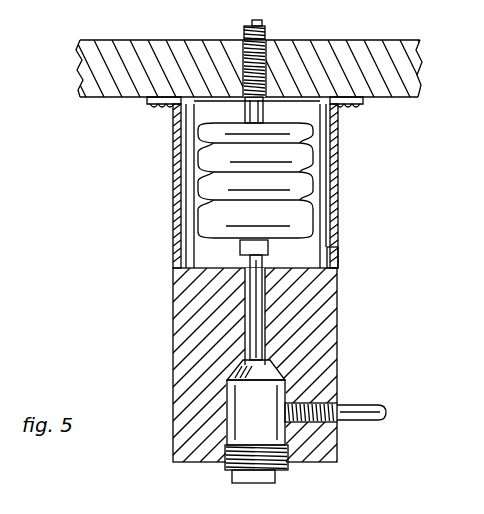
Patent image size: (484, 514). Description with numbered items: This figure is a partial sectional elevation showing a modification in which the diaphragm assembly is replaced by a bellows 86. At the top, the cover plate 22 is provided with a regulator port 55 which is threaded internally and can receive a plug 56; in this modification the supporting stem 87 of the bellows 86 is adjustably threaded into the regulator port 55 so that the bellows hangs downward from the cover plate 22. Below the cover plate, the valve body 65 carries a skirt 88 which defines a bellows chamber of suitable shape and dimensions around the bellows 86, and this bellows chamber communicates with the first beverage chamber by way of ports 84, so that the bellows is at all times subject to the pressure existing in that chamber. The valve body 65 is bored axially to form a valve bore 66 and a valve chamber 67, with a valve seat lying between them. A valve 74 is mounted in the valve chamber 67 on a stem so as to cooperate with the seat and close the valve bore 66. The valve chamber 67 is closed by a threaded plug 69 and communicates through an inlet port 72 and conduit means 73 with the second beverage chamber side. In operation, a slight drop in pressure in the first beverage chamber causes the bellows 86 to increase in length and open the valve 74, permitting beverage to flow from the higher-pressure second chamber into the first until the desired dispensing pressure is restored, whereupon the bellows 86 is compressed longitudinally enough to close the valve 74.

The cover plate 22 is at (358, 52).
The supporting stem 87 is at (212, 52).
The plug 56 is at (263, 23).
The regulator port 55 is at (266, 56).
The skirt 88 is at (173, 165).
The ports 84 is at (338, 257).
The bellows 86 is at (313, 152).
The valve body member 65 is at (305, 298).
The valve bore 66 is at (246, 298).
The valve 74 is at (268, 362).
The valve chamber 67 is at (242, 422).
The threaded plug 69 is at (250, 484).
The inlet port 72 is at (300, 403).
The conduit means 73 is at (366, 425).